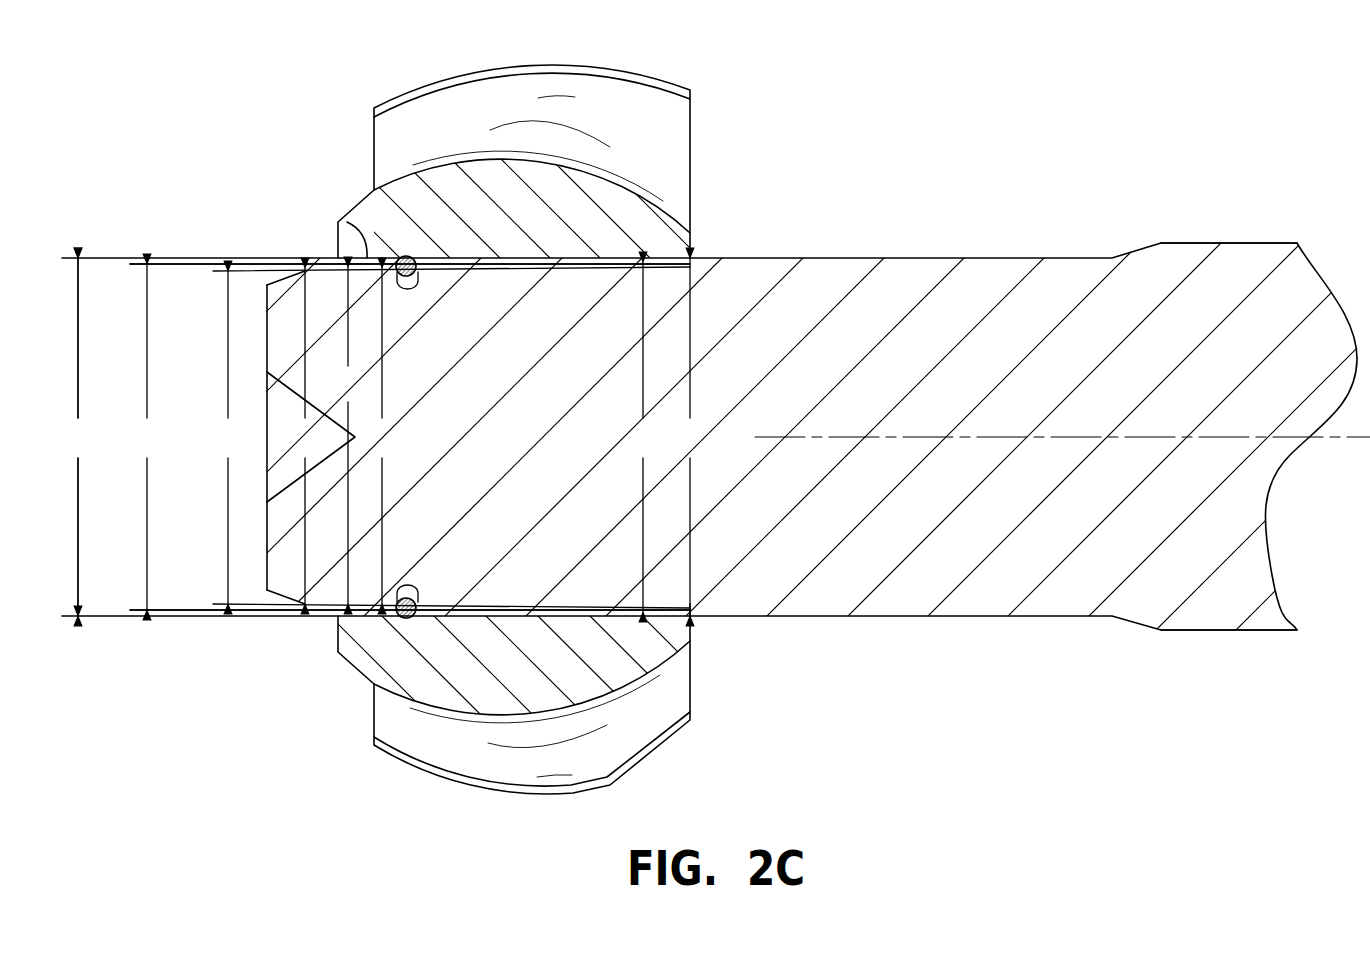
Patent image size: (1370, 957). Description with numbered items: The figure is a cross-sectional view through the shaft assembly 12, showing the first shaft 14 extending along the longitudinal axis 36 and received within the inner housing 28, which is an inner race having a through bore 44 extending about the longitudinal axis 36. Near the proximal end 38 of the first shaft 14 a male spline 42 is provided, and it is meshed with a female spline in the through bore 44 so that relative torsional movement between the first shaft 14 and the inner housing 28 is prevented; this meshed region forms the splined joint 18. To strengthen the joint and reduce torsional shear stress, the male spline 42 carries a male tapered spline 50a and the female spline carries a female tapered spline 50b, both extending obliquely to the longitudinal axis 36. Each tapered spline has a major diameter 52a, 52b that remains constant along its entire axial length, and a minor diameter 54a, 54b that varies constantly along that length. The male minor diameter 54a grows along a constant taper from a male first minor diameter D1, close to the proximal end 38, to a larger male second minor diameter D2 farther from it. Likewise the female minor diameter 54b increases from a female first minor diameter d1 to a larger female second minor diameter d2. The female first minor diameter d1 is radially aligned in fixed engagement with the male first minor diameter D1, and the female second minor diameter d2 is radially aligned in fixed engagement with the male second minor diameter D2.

The shaft assembly 12 is at (827, 140).
The first shaft 14 is at (903, 260).
The splined joint 18 is at (268, 232).
The inner housing 28 is at (352, 652).
The longitudinal axis 36 is at (1172, 437).
The proximal end 38 is at (267, 558).
The male spline 42 is at (338, 220).
The through bore 44 is at (700, 595).
The male tapered spline 50a is at (367, 263).
The female tapered spline 50b is at (455, 258).
The male major diameter 52a is at (146, 437).
The female major diameter 52b is at (78, 437).
The male minor diameter 54a is at (396, 436).
The female minor diameter 54b is at (228, 437).
The male first minor diameter D1 is at (307, 436).
The female first minor diameter d1 is at (348, 435).
The male second minor diameter D2 is at (692, 437).
The female second minor diameter d2 is at (645, 437).